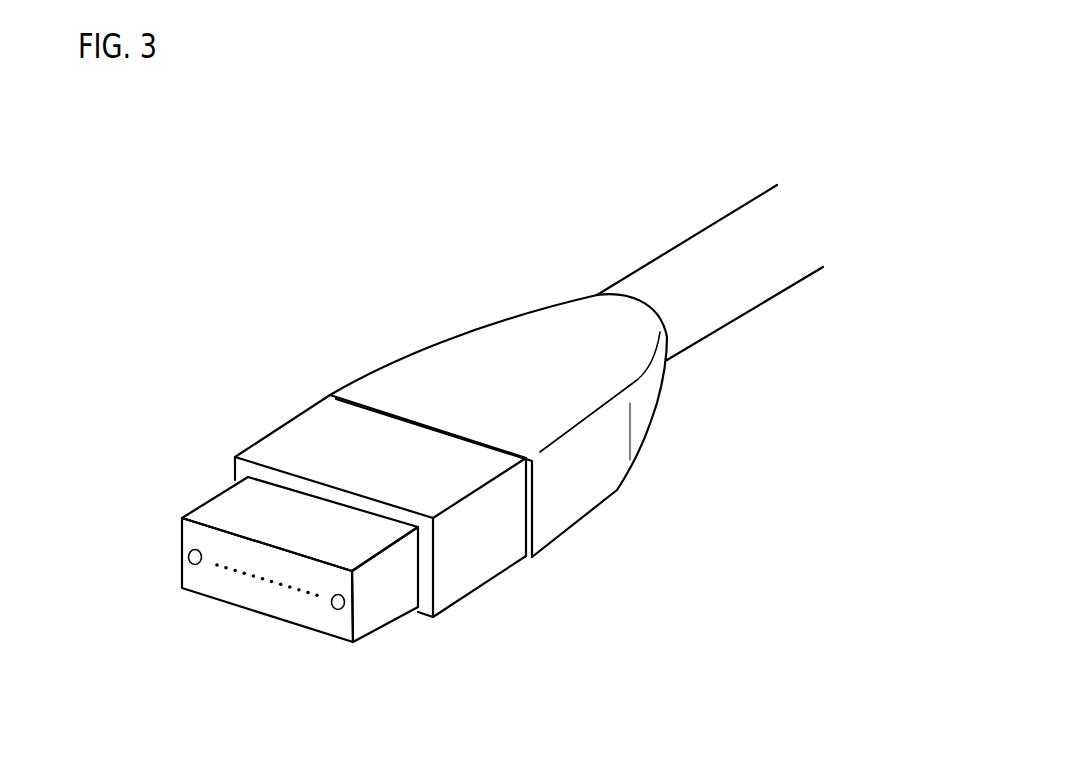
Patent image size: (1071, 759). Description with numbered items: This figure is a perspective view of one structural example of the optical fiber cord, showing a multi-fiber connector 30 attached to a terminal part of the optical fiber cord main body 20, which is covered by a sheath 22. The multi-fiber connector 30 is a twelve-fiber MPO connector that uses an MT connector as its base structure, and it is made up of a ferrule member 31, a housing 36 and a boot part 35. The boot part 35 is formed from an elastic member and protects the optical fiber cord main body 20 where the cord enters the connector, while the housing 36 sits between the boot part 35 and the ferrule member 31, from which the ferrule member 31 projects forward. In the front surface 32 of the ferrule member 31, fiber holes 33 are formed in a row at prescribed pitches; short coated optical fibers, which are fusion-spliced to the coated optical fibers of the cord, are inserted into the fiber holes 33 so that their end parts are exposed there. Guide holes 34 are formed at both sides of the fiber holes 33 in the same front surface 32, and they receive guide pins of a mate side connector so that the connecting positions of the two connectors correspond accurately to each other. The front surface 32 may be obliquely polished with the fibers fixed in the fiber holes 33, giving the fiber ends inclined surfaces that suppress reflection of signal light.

The optical fiber cord main body 20 is at (708, 213).
The sheath 22 is at (725, 310).
The multi-fiber connector 30 is at (435, 318).
The ferrule member 31 is at (309, 588).
The front surface 32 is at (262, 605).
The fiber holes 33 is at (244, 570).
The guide holes 34 is at (190, 563).
The boot part 35 is at (577, 507).
The housing 36 is at (482, 550).